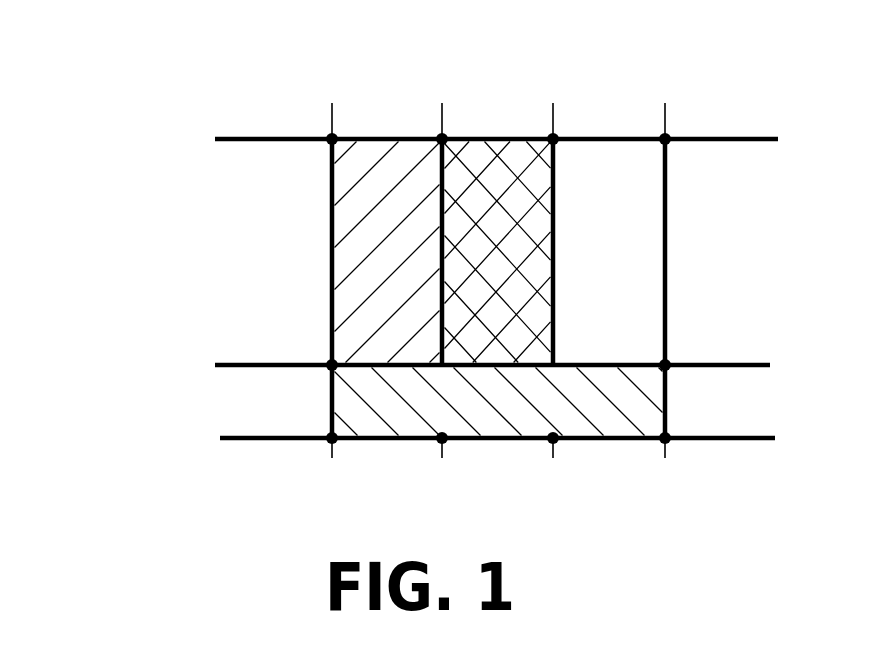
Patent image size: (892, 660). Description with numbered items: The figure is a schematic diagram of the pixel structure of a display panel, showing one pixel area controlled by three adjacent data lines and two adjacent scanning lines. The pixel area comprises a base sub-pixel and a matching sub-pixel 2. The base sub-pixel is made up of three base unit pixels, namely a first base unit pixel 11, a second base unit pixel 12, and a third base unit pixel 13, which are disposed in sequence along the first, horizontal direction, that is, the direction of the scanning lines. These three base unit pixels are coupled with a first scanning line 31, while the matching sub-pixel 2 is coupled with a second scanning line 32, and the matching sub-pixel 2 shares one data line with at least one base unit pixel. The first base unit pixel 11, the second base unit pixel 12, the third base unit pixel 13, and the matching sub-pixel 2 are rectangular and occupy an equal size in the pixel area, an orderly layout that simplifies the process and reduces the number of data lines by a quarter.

The matching sub-pixel 2 is at (612, 400).
The first base unit pixel 11 is at (358, 193).
The second base unit pixel 12 is at (500, 198).
The third base unit pixel 13 is at (602, 193).
The first scanning line 31 is at (215, 139).
The second scanning line 32 is at (215, 365).